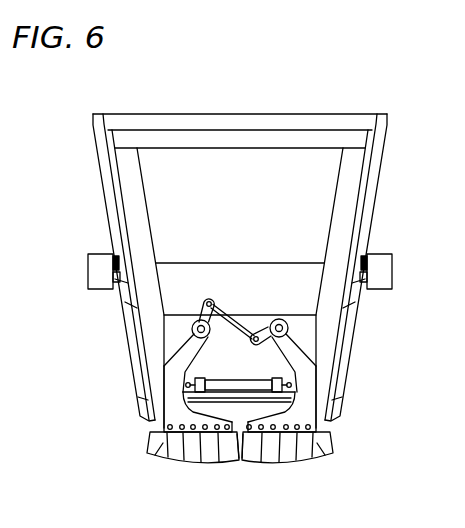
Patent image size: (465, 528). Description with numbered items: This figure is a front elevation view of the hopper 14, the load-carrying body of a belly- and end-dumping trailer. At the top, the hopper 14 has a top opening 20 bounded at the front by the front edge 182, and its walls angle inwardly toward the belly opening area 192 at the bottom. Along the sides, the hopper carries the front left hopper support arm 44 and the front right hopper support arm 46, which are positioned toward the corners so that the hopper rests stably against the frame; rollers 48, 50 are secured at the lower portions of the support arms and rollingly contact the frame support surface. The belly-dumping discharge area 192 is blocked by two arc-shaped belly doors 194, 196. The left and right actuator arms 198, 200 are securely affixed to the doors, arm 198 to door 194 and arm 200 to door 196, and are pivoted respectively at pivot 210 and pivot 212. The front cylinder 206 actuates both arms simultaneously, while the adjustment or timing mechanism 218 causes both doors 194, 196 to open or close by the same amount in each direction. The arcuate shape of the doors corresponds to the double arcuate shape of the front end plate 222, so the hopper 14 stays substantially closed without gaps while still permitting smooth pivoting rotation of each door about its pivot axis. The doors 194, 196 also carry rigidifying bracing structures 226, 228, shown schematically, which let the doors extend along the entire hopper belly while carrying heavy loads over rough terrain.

The hopper 14 is at (185, 107).
The top opening 20 is at (223, 111).
The front edge 182 is at (313, 117).
The front right hopper support arm 46 is at (107, 215).
The front left hopper support arm 44 is at (374, 213).
The roller 50 is at (88, 270).
The roller 48 is at (389, 265).
The pivot 212 is at (192, 323).
The pivot 210 is at (289, 326).
The adjustment mechanism or timing mechanism 218 is at (247, 316).
The front cylinder 206 is at (222, 380).
The left actuator arm 200 is at (170, 383).
The right actuator arm 198 is at (309, 382).
The belly door 196 is at (153, 440).
The belly door 194 is at (329, 437).
The rigidifying bracing structure 228 is at (163, 453).
The rigidifying bracing structure 226 is at (304, 448).
The front end plate 222 is at (222, 450).
The belly opening area 192 is at (247, 475).